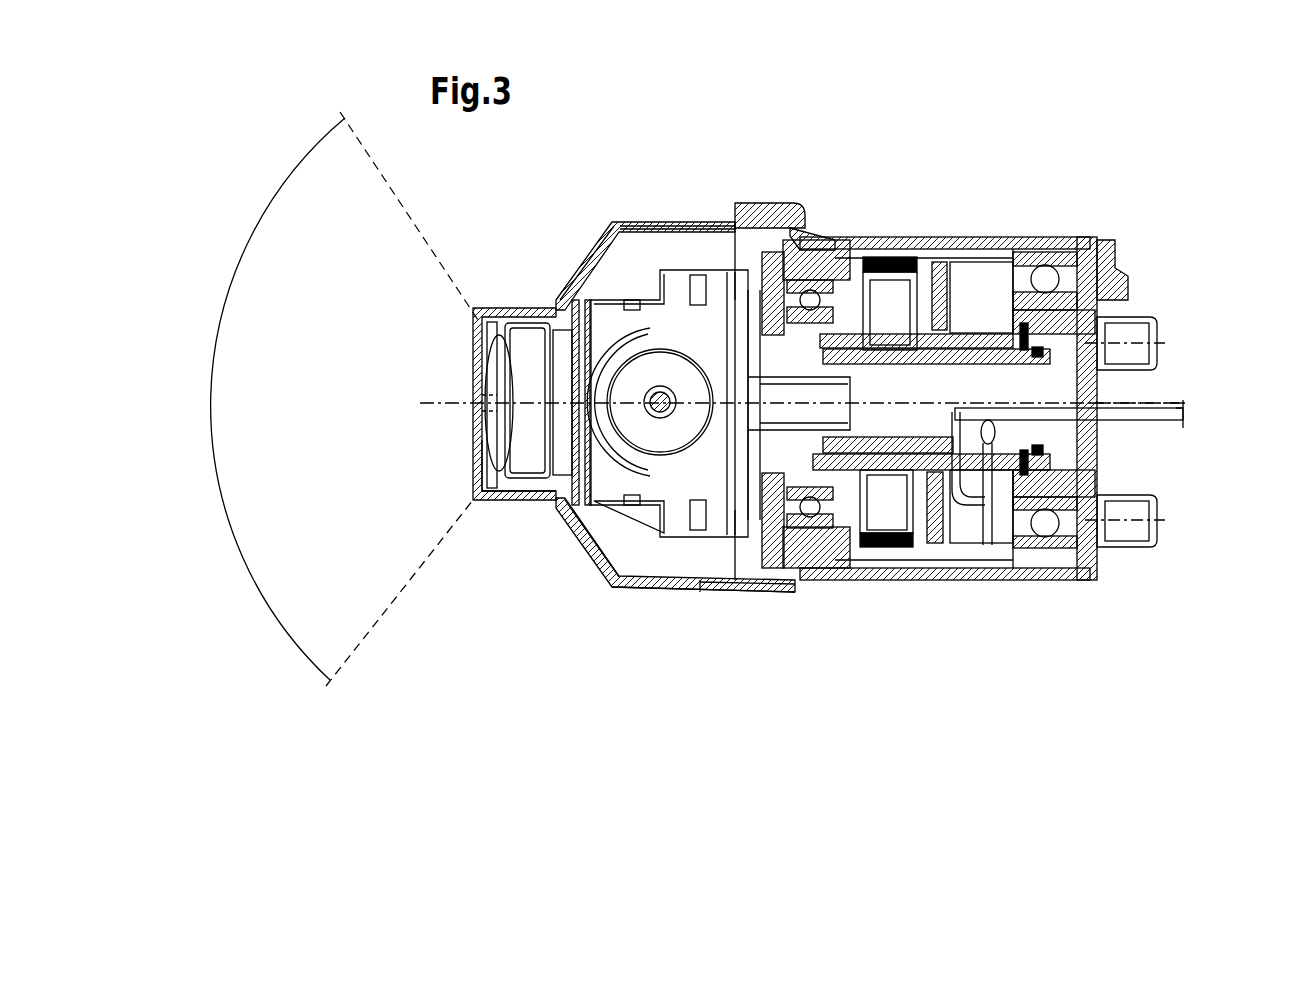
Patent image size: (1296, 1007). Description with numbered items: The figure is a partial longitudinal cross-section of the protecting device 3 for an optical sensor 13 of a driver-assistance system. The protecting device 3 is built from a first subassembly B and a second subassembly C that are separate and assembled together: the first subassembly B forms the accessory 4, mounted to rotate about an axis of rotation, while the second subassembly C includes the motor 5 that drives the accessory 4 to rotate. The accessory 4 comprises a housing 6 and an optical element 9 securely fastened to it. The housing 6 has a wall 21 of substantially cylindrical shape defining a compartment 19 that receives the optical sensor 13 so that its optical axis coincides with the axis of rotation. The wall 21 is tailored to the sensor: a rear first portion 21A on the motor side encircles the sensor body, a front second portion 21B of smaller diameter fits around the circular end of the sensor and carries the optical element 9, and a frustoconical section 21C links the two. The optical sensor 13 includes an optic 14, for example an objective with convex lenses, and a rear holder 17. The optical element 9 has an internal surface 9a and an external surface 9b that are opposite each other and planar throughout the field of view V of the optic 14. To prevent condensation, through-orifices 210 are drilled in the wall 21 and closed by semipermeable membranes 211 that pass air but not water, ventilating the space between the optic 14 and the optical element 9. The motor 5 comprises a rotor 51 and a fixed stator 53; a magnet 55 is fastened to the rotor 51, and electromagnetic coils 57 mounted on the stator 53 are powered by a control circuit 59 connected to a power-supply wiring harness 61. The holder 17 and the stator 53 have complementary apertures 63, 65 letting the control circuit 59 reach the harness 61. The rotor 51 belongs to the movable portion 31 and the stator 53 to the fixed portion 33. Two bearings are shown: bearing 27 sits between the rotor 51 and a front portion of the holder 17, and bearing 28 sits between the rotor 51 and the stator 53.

The protecting device 3 is at (343, 322).
The accessory 4 is at (598, 208).
The motor 5 is at (1117, 218).
The housing 6 is at (737, 226).
The optical element 9 is at (445, 423).
The internal surface 9a is at (480, 447).
The external surface 9b is at (480, 393).
The optical sensor 13 is at (587, 290).
The optic 14 is at (480, 357).
The holder 17 is at (943, 443).
The compartment 19 is at (640, 530).
The wall 21 is at (712, 582).
The rear first portion 21A is at (705, 583).
The front second portion 21B is at (512, 500).
The frustoconical section 21C is at (592, 572).
The bearing 27 is at (806, 276).
The bearing 28 is at (1042, 275).
The movable portion 31 is at (843, 214).
The fixed portion 33 is at (1168, 549).
The rotor 51 is at (920, 258).
The stator 53 is at (980, 337).
The magnet 55 is at (887, 549).
The electromagnetic coils 57 is at (880, 290).
The control circuit 59 is at (957, 512).
The power-supply wiring harness 61 is at (1178, 418).
The aperture 63 is at (993, 470).
The aperture 65 is at (980, 412).
The through-orifice 210 is at (648, 232).
The semipermeable membrane 211 is at (672, 232).
The first subassembly B is at (397, 414).
The second subassembly C is at (1027, 180).
The field of view V is at (260, 399).